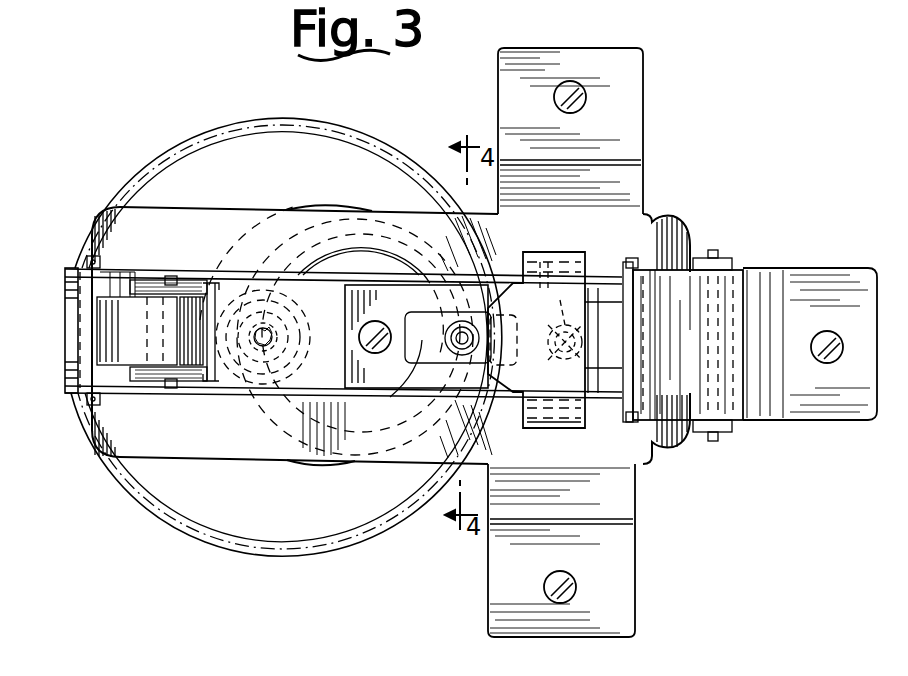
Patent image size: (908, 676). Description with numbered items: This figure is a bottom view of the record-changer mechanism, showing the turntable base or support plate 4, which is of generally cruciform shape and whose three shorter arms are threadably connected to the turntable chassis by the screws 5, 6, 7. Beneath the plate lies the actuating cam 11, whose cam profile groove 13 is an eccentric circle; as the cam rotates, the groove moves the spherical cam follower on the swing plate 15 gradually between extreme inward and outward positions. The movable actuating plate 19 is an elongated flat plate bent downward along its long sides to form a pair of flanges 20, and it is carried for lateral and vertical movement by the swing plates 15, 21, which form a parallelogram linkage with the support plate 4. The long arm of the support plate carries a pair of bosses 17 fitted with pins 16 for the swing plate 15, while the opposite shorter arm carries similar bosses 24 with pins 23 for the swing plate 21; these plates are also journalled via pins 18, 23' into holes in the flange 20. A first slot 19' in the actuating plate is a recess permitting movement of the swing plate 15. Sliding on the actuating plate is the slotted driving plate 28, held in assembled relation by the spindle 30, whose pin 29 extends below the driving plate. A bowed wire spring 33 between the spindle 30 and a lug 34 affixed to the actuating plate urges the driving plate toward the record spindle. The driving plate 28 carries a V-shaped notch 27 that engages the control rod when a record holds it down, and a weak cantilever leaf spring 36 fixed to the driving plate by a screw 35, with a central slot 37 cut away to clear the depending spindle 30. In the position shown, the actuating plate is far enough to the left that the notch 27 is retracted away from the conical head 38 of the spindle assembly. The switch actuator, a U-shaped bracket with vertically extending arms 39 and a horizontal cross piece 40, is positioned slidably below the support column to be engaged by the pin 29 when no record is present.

The turntable base or support plate 4 is at (478, 228).
The screw 5 is at (843, 347).
The screw 6 is at (586, 100).
The screw 7 is at (576, 587).
The actuating cam 11 is at (272, 140).
The cam profile groove 13 is at (318, 207).
The swing plate 15 is at (160, 350).
The pin 16 is at (172, 390).
The projections or bosses 17 is at (157, 280).
The pin 18 is at (88, 258).
The movable actuating plate 19 is at (154, 256).
The first slot 19' is at (70, 412).
The flange 20 is at (246, 266).
The swing plate 21 is at (672, 400).
The pin 23 is at (730, 320).
The pin 23' is at (677, 217).
The projections or bosses 24 is at (730, 262).
The V-shaped notch or slot 27 is at (588, 283).
The slotted driving plate 28 is at (536, 272).
The pin 29 is at (462, 350).
The spindle 30 is at (450, 330).
The bowed wire spring 33 is at (388, 248).
The lug 34 is at (263, 328).
The screw 35 is at (362, 333).
The leaf spring 36 is at (348, 370).
The central portion or slot 37 is at (418, 360).
The head 38 is at (552, 350).
The vertically extending arms 39 is at (564, 258).
The horizontal projecting cross piece 40 is at (545, 418).